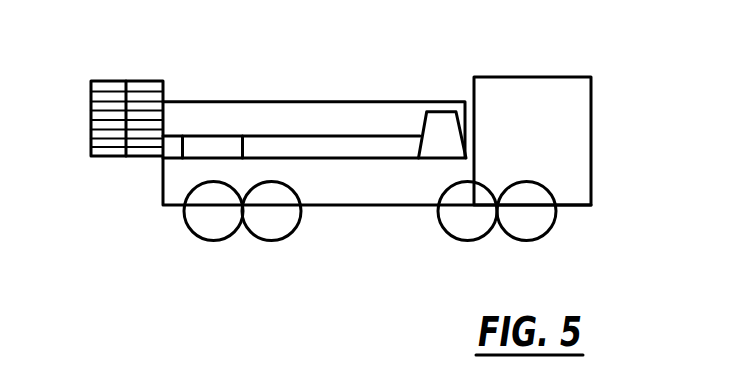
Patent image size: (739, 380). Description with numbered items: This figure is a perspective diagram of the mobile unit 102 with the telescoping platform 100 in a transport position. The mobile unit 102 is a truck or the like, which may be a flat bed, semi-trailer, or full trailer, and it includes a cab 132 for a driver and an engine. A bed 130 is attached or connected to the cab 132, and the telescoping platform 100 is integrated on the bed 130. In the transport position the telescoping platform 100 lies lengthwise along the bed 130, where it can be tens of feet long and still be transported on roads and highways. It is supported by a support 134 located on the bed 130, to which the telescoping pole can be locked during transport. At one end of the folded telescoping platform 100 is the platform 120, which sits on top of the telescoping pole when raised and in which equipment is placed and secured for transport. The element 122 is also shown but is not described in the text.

The telescoping platform 100 is at (350, 145).
The mobile unit 102 is at (417, 120).
The platform 120 is at (89, 128).
The exhaust stack / component housing 122 is at (418, 142).
The bed 130 is at (342, 155).
The cab 132 is at (592, 145).
The support 134 is at (205, 147).